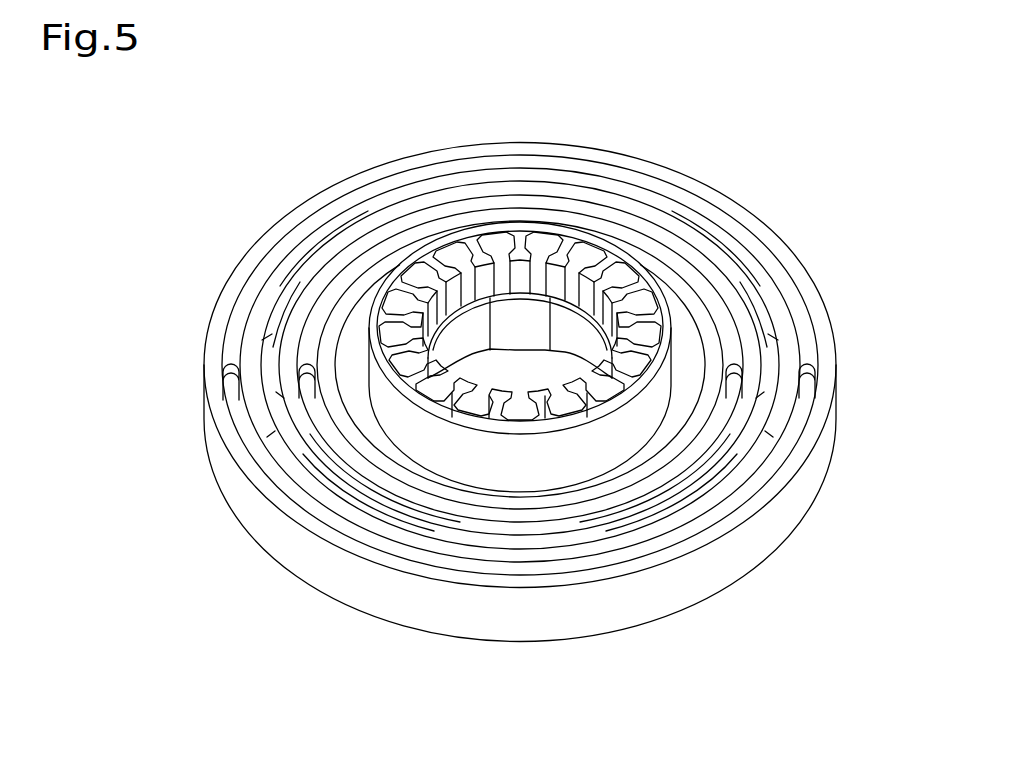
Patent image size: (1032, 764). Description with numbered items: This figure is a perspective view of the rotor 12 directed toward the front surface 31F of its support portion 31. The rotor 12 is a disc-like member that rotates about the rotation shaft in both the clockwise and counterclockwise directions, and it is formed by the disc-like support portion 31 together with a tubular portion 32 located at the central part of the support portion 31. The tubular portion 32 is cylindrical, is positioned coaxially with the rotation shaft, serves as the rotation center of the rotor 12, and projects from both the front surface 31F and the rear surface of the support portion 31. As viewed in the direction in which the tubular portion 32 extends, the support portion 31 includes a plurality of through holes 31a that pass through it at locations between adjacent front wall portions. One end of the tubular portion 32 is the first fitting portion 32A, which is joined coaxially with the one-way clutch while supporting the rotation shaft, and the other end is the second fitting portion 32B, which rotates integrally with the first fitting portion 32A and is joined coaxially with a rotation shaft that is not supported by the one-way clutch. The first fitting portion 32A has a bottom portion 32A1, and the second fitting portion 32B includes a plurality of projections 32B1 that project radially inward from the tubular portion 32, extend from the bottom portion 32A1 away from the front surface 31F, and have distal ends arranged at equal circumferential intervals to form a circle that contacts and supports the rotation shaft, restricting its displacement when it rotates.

The rotor 12 is at (824, 246).
The support portion 31 is at (240, 345).
The front surface 31F is at (520, 365).
The through holes 31a is at (232, 402).
The tubular portion 32 is at (650, 420).
The first fitting portion 32A is at (473, 342).
The bottom portion 32A1 is at (502, 280).
The second fitting portion 32B is at (521, 228).
The projections 32B1 is at (440, 255).